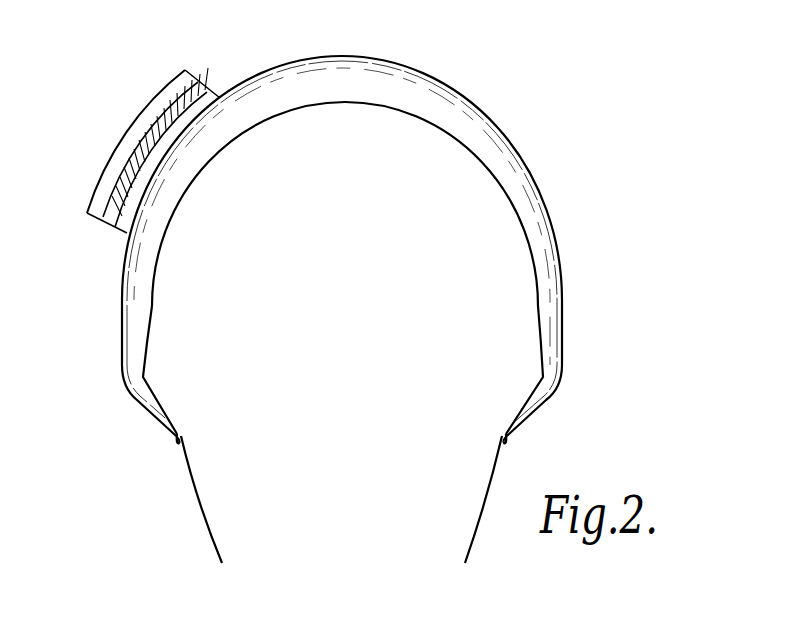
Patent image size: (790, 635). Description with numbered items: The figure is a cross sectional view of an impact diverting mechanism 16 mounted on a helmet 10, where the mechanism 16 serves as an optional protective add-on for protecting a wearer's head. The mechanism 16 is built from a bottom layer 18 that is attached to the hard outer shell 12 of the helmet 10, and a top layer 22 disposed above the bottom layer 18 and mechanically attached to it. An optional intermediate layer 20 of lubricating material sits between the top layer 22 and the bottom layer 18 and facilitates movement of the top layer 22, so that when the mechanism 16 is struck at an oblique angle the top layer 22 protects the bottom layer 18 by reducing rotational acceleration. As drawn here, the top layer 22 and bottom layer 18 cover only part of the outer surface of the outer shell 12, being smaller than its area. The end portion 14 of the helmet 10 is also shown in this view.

The helmet 10 is at (467, 148).
The outer shell 12 is at (411, 66).
The end portion of headband 14 is at (522, 409).
The impact diverting mechanism 16 is at (144, 160).
The bottom layer 18 is at (217, 97).
The intermediate layer 20 is at (108, 223).
The top layer 22 is at (87, 217).